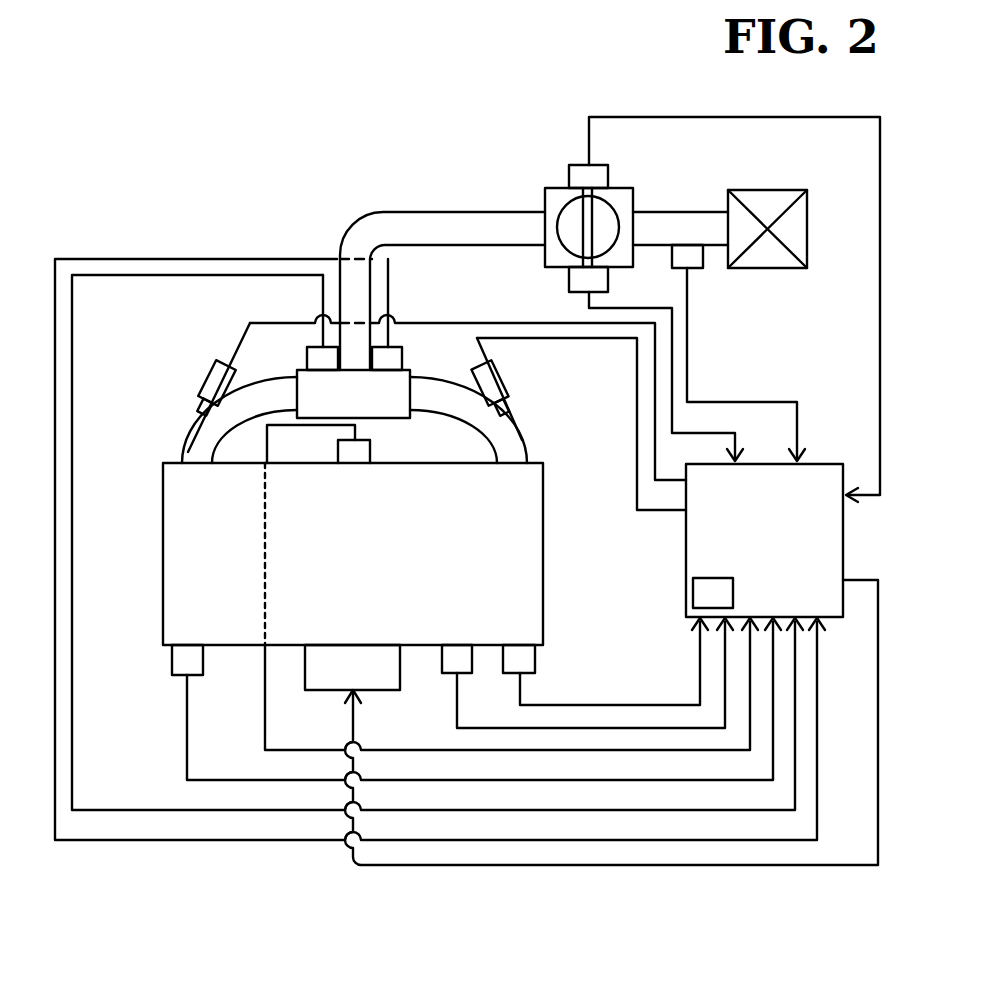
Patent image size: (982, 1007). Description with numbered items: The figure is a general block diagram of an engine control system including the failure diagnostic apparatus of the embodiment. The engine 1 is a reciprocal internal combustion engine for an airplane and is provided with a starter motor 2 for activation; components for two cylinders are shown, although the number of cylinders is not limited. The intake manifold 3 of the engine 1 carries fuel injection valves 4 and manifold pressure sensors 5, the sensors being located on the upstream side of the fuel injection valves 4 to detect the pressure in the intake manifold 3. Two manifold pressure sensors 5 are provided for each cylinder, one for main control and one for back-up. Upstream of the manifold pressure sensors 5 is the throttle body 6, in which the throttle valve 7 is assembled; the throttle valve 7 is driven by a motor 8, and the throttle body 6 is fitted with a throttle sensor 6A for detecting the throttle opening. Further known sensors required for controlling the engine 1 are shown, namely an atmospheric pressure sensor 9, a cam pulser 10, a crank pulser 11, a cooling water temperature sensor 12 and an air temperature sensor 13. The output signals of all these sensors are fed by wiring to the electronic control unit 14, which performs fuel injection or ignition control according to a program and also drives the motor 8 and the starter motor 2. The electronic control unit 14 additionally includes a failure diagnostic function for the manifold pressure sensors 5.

The engine 1 is at (163, 580).
The starter motor 2 is at (313, 690).
The intake manifold 3 is at (192, 448).
The fuel injection valve 4 is at (208, 376).
The manifold pressure sensor 5 is at (307, 358).
The throttle body 6 is at (545, 190).
The throttle sensor 6A is at (569, 282).
The throttle valve 7 is at (605, 223).
The motor 8 is at (570, 165).
The atmospheric pressure sensor 9 is at (693, 598).
The cam pulser 10 is at (180, 676).
The crank pulser 11 is at (370, 452).
The cooling water temperature sensor 12 is at (450, 676).
The air temperature sensor 13 is at (698, 270).
The electronic control unit (ECU) 14 is at (686, 552).